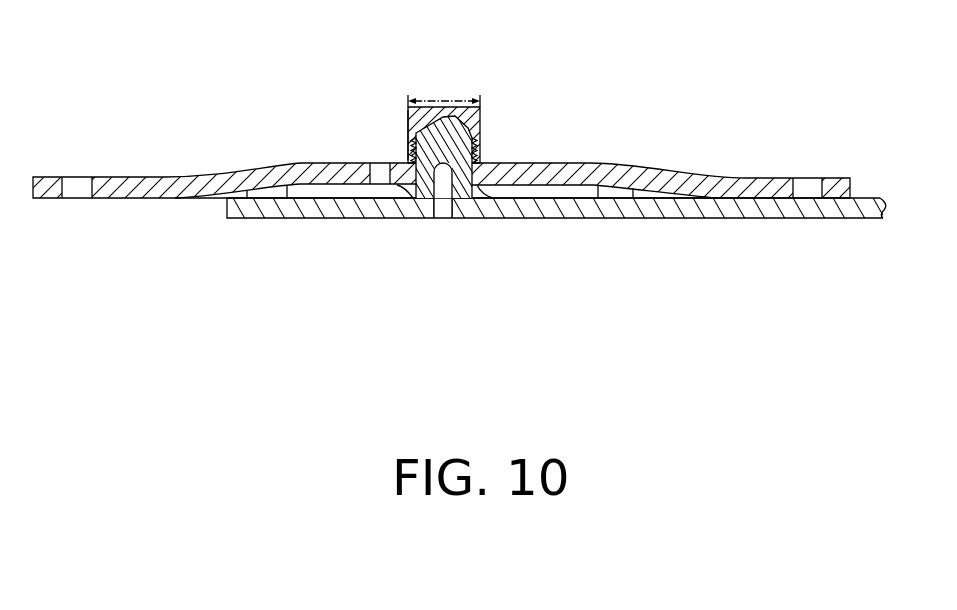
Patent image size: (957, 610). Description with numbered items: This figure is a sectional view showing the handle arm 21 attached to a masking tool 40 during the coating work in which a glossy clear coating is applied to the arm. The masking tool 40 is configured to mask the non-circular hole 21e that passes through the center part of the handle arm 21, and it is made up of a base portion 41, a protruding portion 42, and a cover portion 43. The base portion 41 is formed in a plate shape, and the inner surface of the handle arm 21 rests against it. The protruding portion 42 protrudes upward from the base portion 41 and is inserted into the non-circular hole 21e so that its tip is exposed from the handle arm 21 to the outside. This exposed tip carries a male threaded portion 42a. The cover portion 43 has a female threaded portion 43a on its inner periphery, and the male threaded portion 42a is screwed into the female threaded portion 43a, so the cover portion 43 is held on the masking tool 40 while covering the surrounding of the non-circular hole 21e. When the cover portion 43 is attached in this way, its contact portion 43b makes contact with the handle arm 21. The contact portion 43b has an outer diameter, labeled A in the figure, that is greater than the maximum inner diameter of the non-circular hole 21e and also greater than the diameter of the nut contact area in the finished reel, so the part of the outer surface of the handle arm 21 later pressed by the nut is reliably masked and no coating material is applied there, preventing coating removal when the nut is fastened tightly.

The handle arm 21 is at (146, 146).
The non-circular hole 21e is at (453, 203).
The masking tool 40 is at (556, 280).
The base portion 41 is at (293, 230).
The protruding portion 42 is at (458, 130).
The male threaded portion 42a is at (408, 120).
The cover portion 43 is at (486, 109).
The female threaded portion 43a is at (476, 152).
The contact portion 43b is at (409, 152).